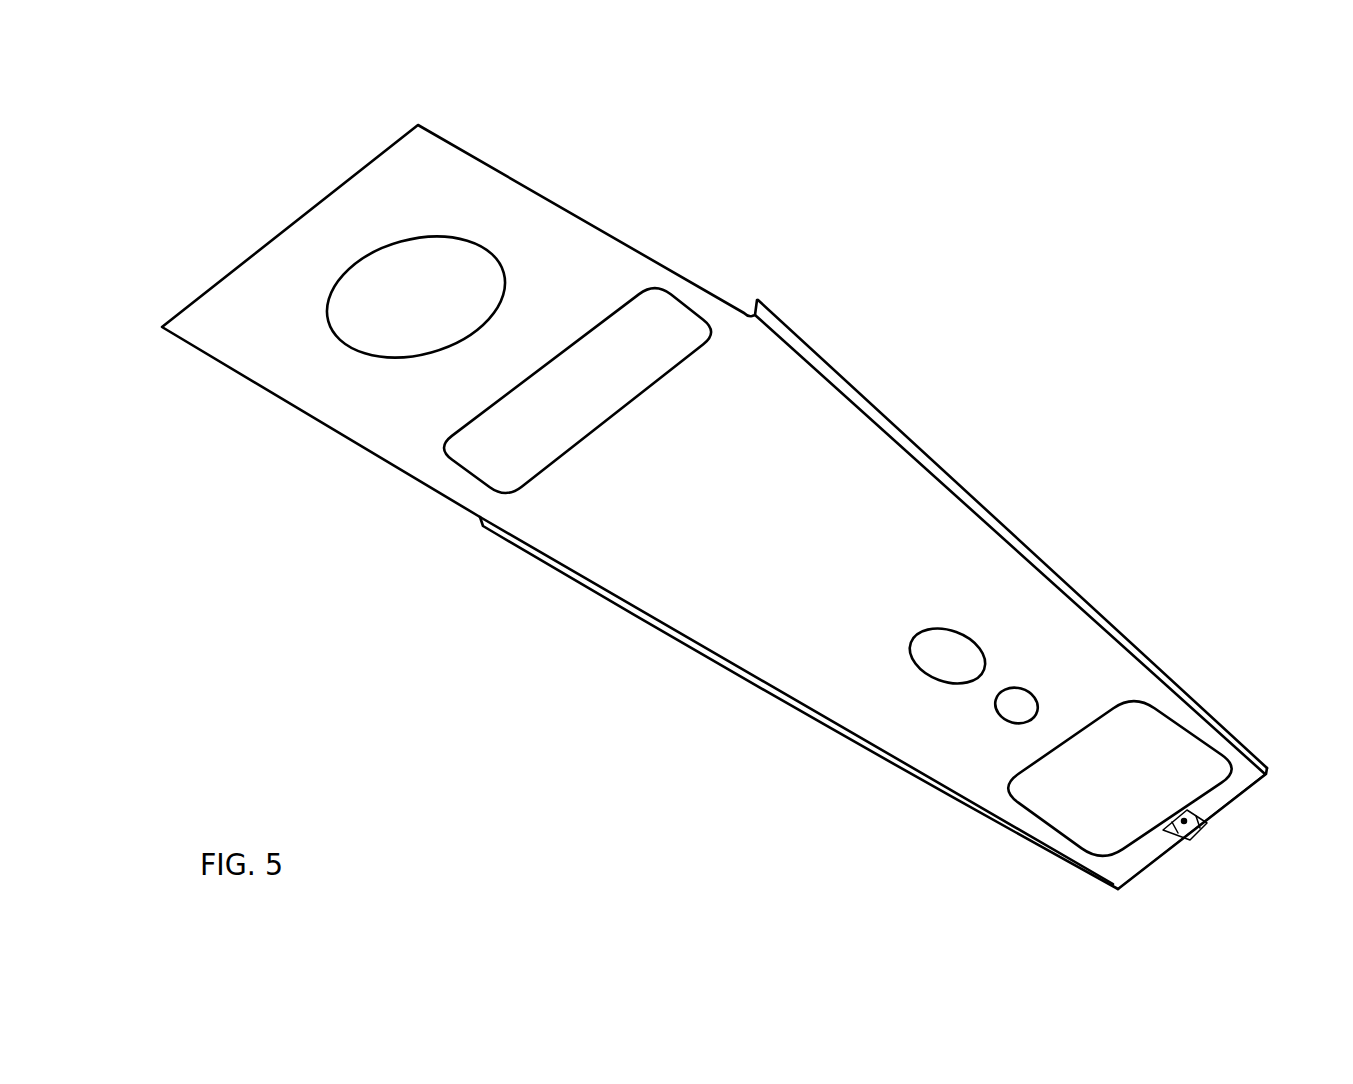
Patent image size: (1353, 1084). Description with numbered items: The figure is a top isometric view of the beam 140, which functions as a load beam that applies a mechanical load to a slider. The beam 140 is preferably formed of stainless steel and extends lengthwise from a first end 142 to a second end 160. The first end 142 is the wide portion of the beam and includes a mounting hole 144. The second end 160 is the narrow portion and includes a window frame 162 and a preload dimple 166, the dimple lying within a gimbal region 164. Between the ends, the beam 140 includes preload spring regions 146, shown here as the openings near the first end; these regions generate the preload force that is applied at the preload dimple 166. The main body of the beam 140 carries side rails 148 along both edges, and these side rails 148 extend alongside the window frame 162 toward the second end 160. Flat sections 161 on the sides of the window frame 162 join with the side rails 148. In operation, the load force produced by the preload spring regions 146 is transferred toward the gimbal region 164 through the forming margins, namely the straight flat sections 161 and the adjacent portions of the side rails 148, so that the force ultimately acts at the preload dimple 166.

The beam 140 is at (1066, 205).
The first end 142 is at (499, 129).
The mounting hole 144 is at (413, 237).
The preload spring regions 146 is at (689, 292).
The side rails 148 is at (1090, 600).
The second end 160 is at (1198, 451).
The flat sections 161 is at (1197, 727).
The window frame 162 is at (1118, 698).
The gimbal region 164 is at (1237, 823).
The preload dimple 166 is at (1187, 833).